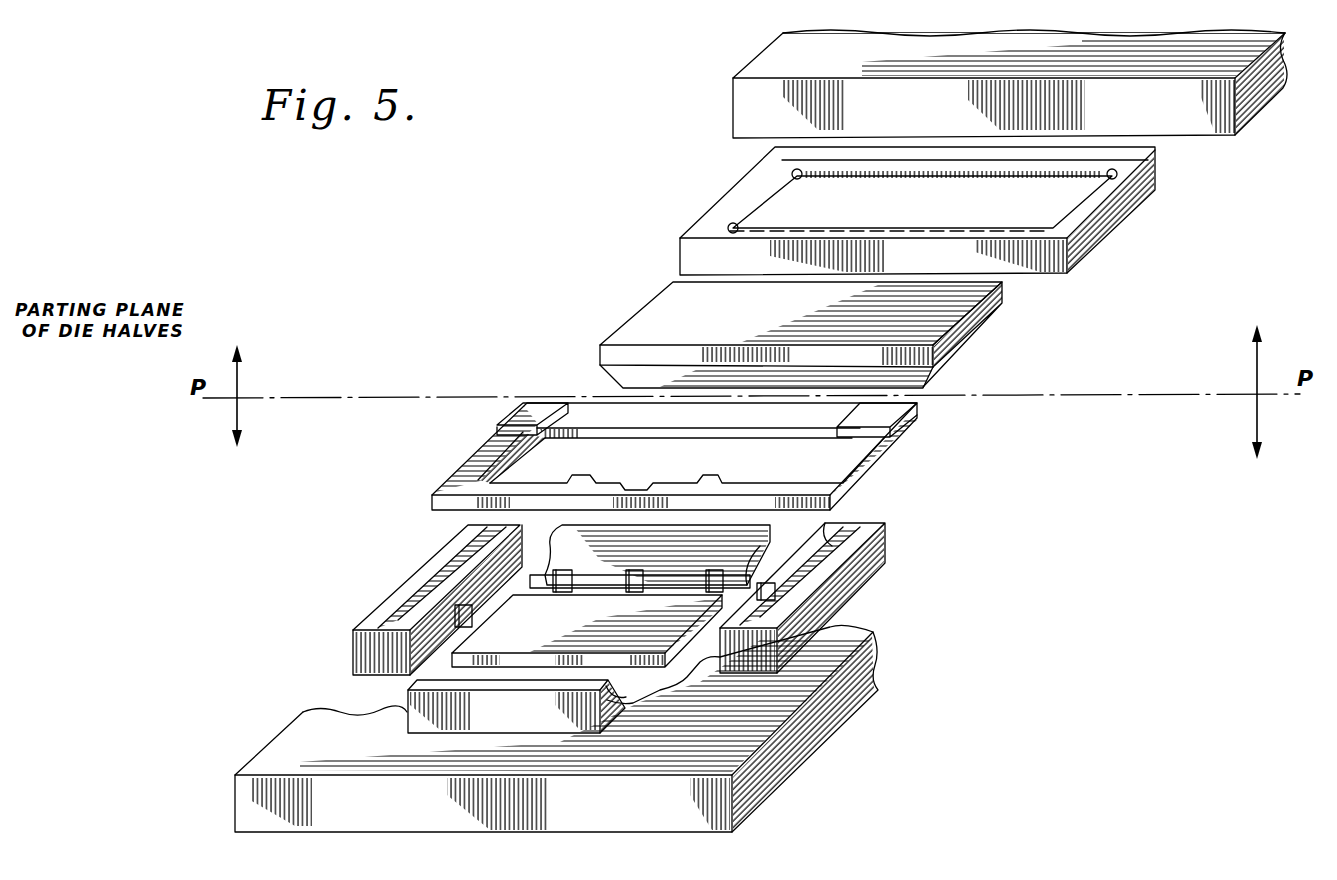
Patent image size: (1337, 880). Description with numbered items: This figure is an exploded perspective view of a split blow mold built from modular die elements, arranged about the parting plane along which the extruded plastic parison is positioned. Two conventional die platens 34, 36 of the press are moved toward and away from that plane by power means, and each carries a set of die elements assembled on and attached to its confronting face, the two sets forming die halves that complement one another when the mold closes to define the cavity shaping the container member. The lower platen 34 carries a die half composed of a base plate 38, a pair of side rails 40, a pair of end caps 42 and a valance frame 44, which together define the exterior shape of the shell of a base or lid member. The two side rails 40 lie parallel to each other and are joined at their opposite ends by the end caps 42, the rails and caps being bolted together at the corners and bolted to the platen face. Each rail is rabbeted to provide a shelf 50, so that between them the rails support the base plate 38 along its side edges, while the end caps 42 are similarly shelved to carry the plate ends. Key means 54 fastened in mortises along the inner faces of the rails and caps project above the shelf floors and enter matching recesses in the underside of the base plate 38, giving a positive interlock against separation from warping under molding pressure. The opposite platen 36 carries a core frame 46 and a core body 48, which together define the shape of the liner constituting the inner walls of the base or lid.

The die platen 34 is at (803, 740).
The die platen 36 is at (1148, 119).
The base plate 38 is at (568, 627).
The side rail 40 is at (768, 538).
The end cap 42 is at (390, 600).
The valance frame 44 is at (883, 446).
The core frame 46 is at (1118, 216).
The core body 48 is at (967, 342).
The shelf 50 is at (673, 567).
The key means 54 is at (470, 600).